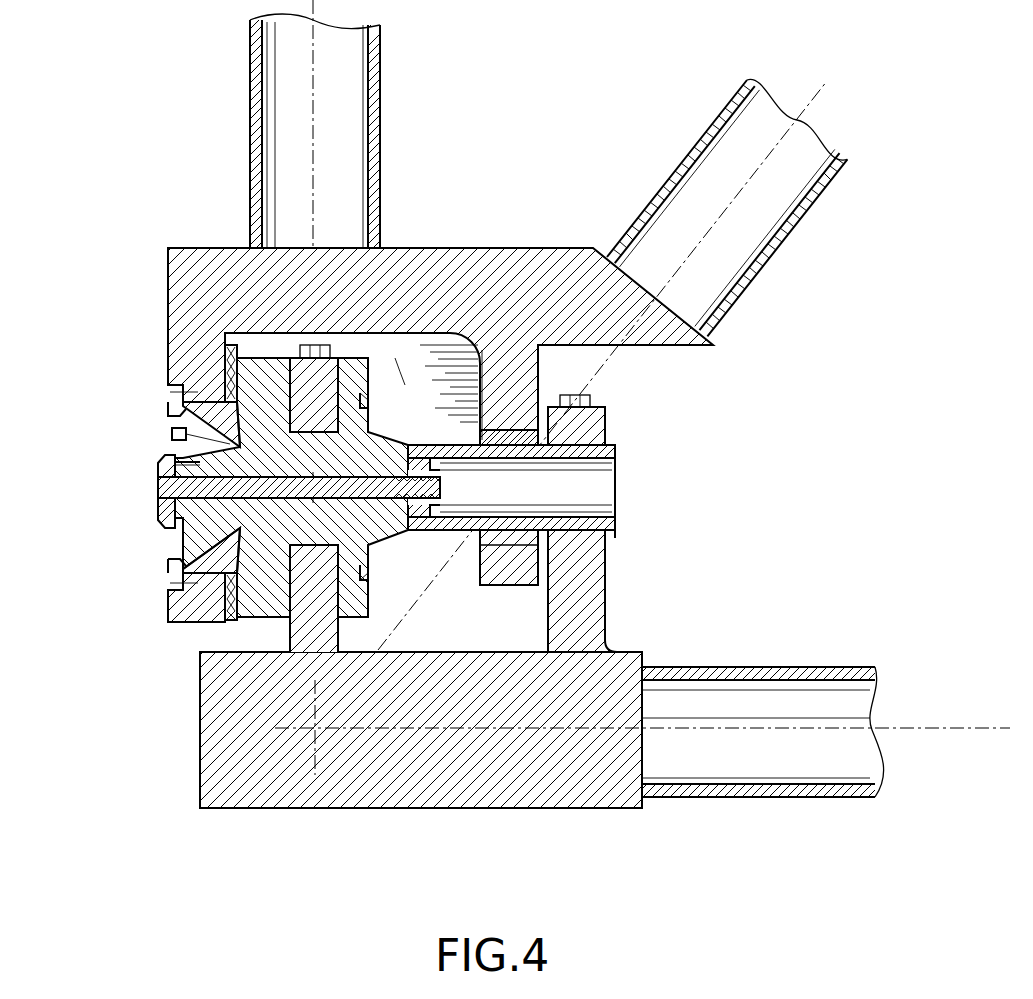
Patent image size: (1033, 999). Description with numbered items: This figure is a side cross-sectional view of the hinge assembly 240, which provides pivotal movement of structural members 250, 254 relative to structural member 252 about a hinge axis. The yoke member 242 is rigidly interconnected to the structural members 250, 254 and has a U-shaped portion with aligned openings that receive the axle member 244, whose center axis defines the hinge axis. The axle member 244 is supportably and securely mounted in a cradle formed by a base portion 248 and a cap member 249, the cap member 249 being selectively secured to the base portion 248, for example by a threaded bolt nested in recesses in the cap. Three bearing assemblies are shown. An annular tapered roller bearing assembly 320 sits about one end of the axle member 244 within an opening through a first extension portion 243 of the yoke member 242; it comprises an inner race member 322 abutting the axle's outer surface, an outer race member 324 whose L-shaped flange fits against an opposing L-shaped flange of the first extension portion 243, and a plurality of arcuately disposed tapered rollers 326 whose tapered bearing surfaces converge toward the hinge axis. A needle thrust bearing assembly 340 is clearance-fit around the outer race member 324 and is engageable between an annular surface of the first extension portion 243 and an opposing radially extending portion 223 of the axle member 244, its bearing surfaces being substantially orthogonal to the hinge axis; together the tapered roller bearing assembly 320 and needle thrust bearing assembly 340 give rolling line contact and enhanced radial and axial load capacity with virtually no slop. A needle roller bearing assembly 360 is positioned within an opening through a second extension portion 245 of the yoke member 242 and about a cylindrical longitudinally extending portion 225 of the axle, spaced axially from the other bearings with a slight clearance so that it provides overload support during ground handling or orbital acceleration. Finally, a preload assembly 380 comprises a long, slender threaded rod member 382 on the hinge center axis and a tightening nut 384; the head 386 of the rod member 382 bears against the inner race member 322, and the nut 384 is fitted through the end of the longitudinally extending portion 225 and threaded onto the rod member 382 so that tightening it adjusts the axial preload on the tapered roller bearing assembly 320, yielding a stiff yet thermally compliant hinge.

The structural member 250 is at (250, 130).
The structural member 252 is at (740, 795).
The structural member 254 is at (785, 234).
The yoke member 242 is at (197, 282).
The first extension portion 243 is at (200, 620).
The hinge assembly 240 is at (677, 400).
The second extension portion 245 is at (532, 373).
The radially extending portion 223 is at (255, 352).
The axle member 244 is at (366, 532).
The base portion 248 is at (605, 598).
The cap member 249 is at (588, 422).
The longitudinally extending portion 225 is at (580, 448).
The needle roller bearing assembly 360 is at (603, 541).
The needle thrust bearing assembly 340 is at (216, 334).
The outer race member 324 is at (190, 395).
The tapered roller bearing assembly 320 is at (152, 410).
The tapered rollers 326 is at (180, 435).
The inner race member 322 is at (190, 465).
The head 386 is at (178, 493).
The preload assembly 380 is at (140, 520).
The rod member 382 is at (426, 443).
The tightening nut 384 is at (442, 500).